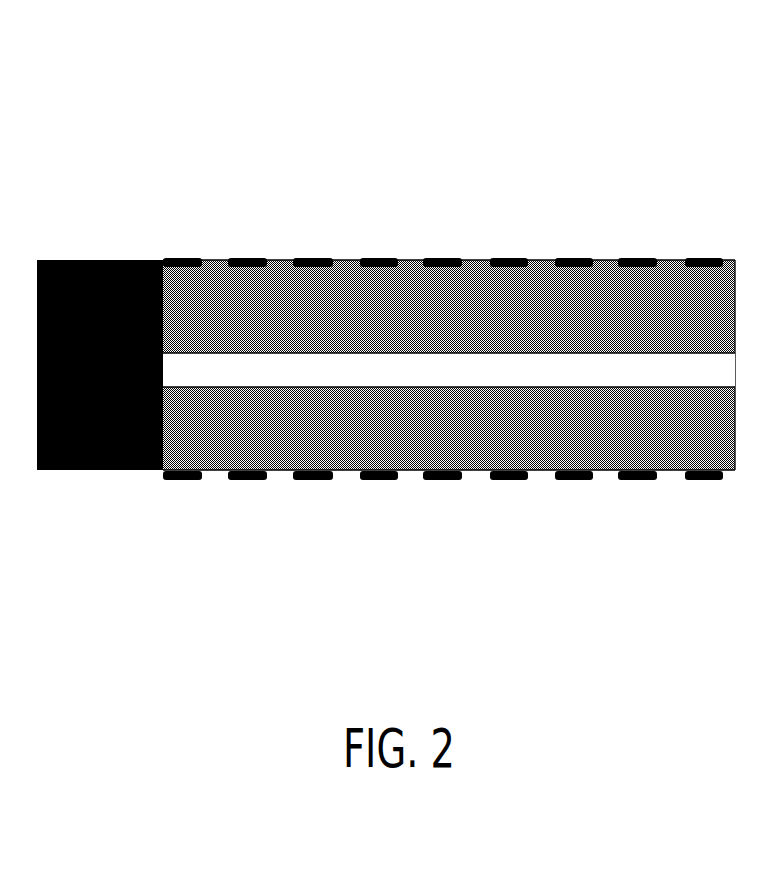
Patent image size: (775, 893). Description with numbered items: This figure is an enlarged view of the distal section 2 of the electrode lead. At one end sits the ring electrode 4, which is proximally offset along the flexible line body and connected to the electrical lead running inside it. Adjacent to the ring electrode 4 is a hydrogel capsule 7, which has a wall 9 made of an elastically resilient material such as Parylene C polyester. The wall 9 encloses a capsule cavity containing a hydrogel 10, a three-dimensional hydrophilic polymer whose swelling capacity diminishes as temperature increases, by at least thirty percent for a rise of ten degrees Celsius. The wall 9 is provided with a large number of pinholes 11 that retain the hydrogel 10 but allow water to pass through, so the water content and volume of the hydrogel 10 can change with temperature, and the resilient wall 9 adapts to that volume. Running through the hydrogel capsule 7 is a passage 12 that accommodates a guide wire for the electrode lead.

The distal section 2 is at (386, 307).
The ring electrode 4 is at (100, 260).
The hydrogel capsule 7 is at (317, 485).
The wall 9 is at (511, 481).
The hydrogel 10 is at (645, 312).
The pinholes 11 is at (607, 258).
The passage 12 is at (672, 370).